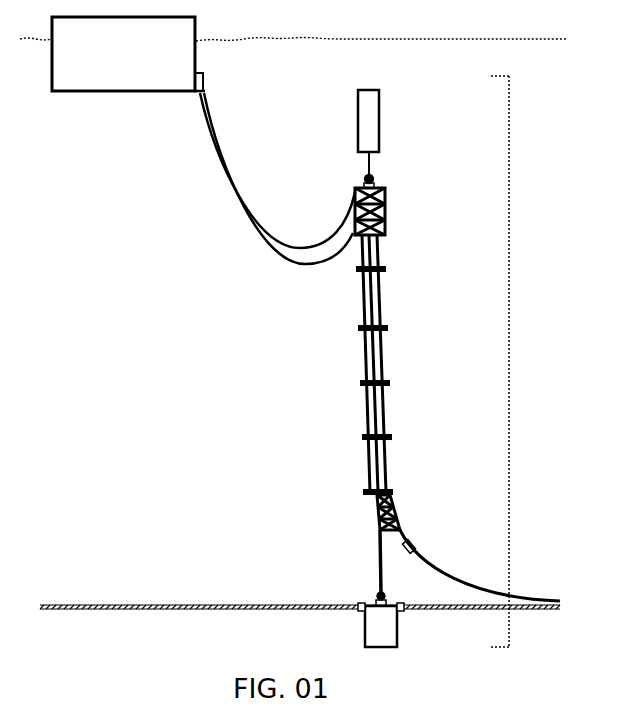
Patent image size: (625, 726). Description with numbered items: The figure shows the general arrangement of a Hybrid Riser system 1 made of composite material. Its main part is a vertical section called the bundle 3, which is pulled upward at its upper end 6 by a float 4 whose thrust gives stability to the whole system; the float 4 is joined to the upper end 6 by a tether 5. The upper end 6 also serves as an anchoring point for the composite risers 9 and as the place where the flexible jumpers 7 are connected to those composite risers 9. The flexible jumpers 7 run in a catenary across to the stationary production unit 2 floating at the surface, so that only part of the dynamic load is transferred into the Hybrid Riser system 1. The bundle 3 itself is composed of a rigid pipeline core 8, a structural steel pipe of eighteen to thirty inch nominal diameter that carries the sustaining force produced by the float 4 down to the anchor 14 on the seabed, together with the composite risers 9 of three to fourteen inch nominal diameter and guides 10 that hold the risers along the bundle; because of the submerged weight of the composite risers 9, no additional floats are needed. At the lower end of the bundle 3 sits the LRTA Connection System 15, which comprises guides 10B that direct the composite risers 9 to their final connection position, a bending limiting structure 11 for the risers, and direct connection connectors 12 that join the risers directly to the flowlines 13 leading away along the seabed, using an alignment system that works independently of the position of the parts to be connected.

The Hybrid Riser system 1 is at (518, 361).
The stationary production unit (UEP) 2 is at (128, 54).
The bundle 3 is at (419, 363).
The float 4 is at (383, 111).
The tether 5 is at (376, 165).
The upper end 6 is at (390, 209).
The flexible jumpers 7 is at (271, 232).
The rigid pipeline core 8 is at (380, 284).
The composite risers 9 is at (386, 298).
The guides 10 is at (455, 248).
The guides 10B is at (393, 489).
The bending limiting structure 11 is at (397, 505).
The direct connection connectors 12 is at (419, 537).
The flowlines 13 is at (446, 571).
The anchor 14 is at (362, 598).
The LRTA Connection System 15 is at (340, 568).